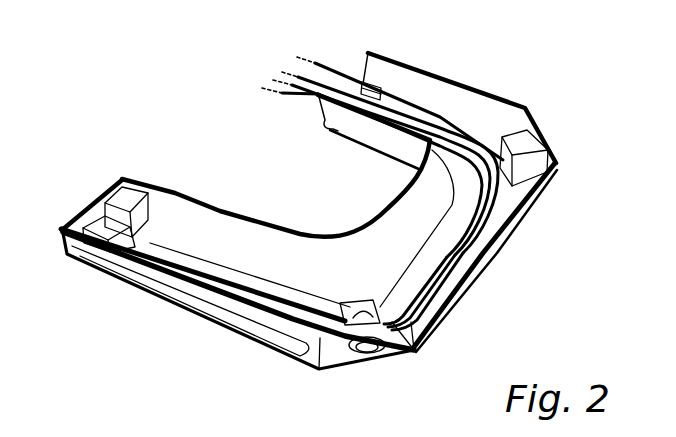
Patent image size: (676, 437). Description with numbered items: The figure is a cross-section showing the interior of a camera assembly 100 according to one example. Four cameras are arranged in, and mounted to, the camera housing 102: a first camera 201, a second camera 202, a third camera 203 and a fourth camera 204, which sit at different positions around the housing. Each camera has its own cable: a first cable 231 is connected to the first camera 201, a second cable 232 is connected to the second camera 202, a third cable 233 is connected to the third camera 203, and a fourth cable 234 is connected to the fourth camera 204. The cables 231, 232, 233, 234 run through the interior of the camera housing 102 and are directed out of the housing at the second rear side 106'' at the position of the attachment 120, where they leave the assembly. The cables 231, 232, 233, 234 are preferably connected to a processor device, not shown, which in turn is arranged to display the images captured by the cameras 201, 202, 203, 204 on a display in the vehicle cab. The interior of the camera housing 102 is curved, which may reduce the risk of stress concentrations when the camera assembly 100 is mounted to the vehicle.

The camera assembly 100 is at (546, 60).
The camera housing 102 is at (520, 217).
The second rear side 106'' is at (321, 56).
The attachment 120 is at (318, 144).
The first camera 201 is at (97, 222).
The second camera 202 is at (123, 192).
The third camera 203 is at (414, 350).
The fourth camera 204 is at (520, 145).
The first cable 231 is at (134, 212).
The second cable 232 is at (145, 215).
The third cable 233 is at (483, 245).
The fourth cable 234 is at (421, 108).